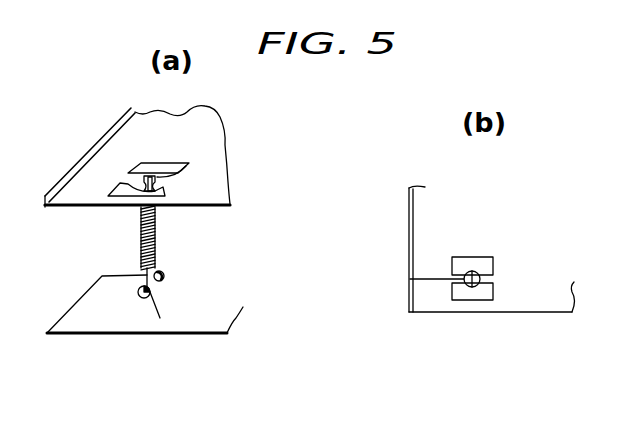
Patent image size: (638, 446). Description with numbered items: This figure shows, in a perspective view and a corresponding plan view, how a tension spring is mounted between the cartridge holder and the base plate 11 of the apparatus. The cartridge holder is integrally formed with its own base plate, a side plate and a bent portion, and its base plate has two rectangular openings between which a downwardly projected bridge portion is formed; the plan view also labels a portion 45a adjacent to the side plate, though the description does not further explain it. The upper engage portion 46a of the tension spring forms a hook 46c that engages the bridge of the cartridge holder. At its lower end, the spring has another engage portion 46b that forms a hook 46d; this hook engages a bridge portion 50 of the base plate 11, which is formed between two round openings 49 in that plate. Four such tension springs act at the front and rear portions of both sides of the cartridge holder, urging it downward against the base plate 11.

The base plate 11 is at (80, 334).
The hole in plate 45a is at (410, 279).
The engage portion 46a is at (113, 165).
The engage portion 46b is at (131, 296).
The hook 46c is at (145, 180).
The hook 46d is at (100, 277).
The round opening 49 is at (165, 277).
The bridge portion 50 is at (160, 318).